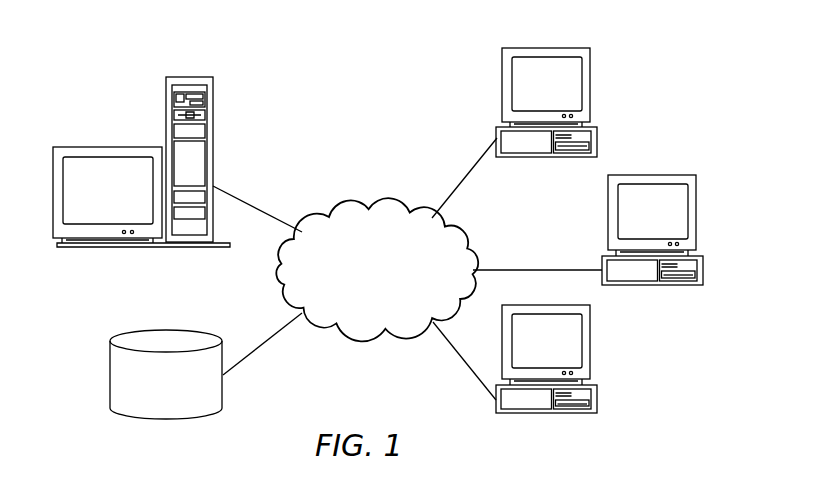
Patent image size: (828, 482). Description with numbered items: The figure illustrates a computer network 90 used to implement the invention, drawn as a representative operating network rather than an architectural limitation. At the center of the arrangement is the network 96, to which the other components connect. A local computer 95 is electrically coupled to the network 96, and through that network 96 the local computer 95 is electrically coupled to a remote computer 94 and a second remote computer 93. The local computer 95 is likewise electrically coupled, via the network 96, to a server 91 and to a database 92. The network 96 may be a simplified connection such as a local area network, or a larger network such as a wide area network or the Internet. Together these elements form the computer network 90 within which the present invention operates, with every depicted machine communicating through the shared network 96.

The computer network 90 is at (305, 70).
The server 91 is at (108, 147).
The database 92 is at (110, 375).
The remote computer 93 is at (590, 347).
The remote computer 94 is at (696, 217).
The local computer 95 is at (590, 92).
The network 96 is at (377, 269).